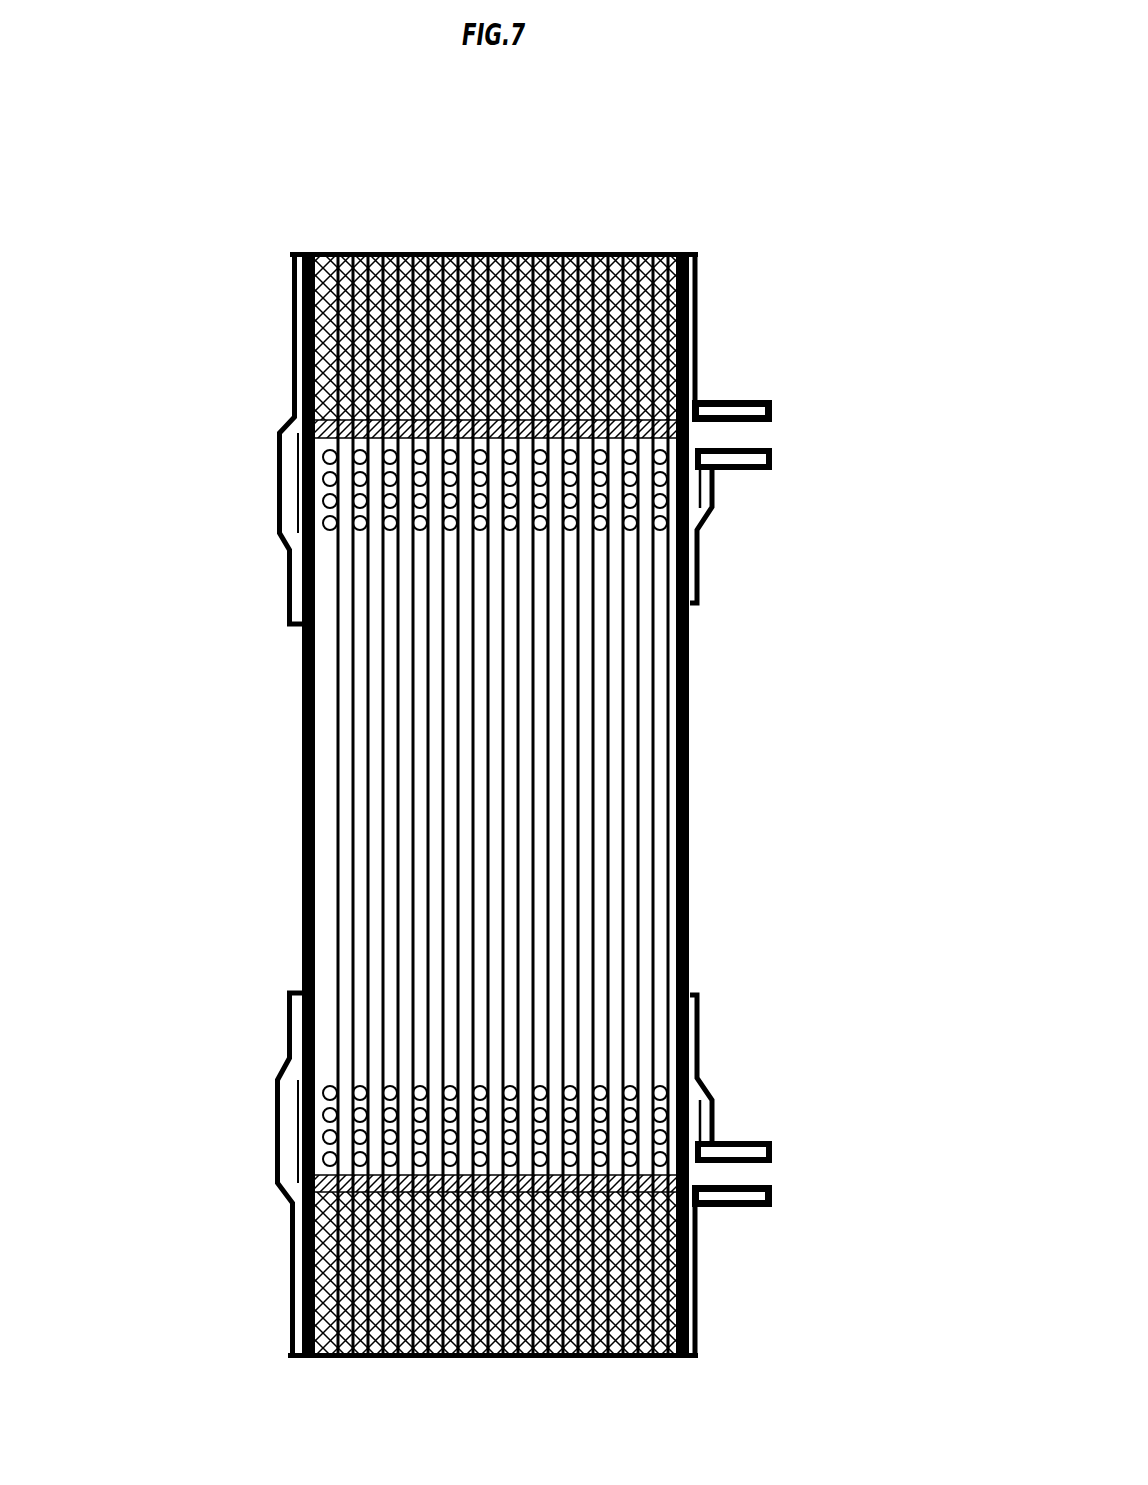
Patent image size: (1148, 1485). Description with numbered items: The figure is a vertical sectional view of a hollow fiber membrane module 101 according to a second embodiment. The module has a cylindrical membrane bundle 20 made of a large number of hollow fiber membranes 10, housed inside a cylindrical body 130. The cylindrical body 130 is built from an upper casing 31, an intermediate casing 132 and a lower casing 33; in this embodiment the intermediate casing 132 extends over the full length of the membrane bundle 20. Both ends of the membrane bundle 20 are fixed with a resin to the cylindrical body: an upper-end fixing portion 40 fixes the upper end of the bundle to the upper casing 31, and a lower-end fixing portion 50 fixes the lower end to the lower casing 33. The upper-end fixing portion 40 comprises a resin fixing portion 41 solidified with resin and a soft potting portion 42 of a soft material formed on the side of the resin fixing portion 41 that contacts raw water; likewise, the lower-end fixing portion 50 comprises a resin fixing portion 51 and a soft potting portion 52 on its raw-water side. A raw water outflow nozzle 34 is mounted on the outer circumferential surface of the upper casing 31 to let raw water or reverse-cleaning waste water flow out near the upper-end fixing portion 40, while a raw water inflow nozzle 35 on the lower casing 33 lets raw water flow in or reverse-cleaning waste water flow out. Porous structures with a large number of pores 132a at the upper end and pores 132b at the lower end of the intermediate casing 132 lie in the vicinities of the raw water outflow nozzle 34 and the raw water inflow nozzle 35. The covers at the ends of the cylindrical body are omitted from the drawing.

The hollow fiber membrane module 101 is at (764, 180).
The cylindrical body 130 is at (716, 300).
The upper casing 31 is at (699, 360).
The lower casing 33 is at (703, 1082).
The raw water outflow nozzle 34 is at (762, 398).
The raw water inflow nozzle 35 is at (753, 1140).
The intermediate casing 132 is at (690, 718).
The pores 132a is at (324, 522).
The pores 132b is at (326, 1157).
The upper-end fixing portion 40 is at (166, 290).
The resin fixing portion 41 is at (302, 297).
The soft potting portion 42 is at (305, 428).
The lower-end fixing portion 50 is at (182, 1213).
The resin fixing portion 51 is at (302, 1280).
The soft potting portion 52 is at (305, 1178).
The membrane bundle 20 is at (328, 663).
The hollow fiber membranes 10 is at (357, 712).